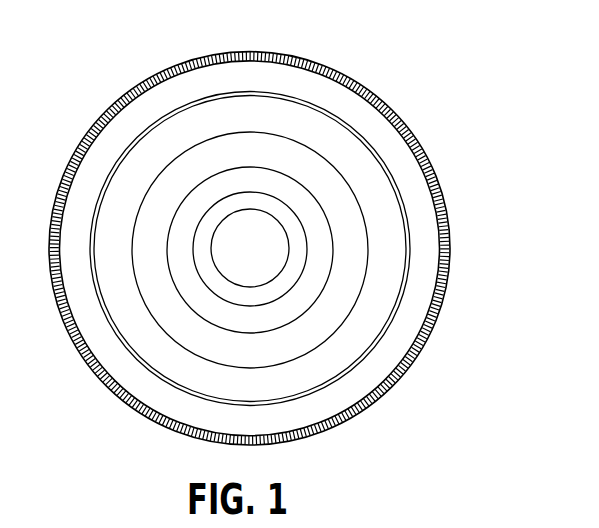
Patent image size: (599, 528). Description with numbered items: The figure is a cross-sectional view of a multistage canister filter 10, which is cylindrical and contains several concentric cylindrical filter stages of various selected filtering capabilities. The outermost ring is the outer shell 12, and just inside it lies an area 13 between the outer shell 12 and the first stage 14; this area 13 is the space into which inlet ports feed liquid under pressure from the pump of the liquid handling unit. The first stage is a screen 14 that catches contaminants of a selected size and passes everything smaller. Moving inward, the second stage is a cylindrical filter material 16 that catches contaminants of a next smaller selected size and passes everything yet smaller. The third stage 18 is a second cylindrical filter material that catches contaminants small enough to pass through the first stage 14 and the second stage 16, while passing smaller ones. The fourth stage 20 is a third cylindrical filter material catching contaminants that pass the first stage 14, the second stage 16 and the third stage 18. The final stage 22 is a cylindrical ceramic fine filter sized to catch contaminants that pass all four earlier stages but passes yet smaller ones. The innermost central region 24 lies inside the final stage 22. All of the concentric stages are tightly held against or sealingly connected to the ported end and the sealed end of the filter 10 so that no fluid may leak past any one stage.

The filter 10 is at (403, 108).
The outer shell 12 is at (205, 437).
The area between outer shell and first stage 13 is at (262, 422).
The first stage screen 14 is at (293, 403).
The second stage cylindrical filter material 16 is at (275, 387).
The third stage 18 is at (310, 333).
The fourth stage 20 is at (288, 307).
The final stage 22 is at (292, 247).
The core 24 is at (267, 232).